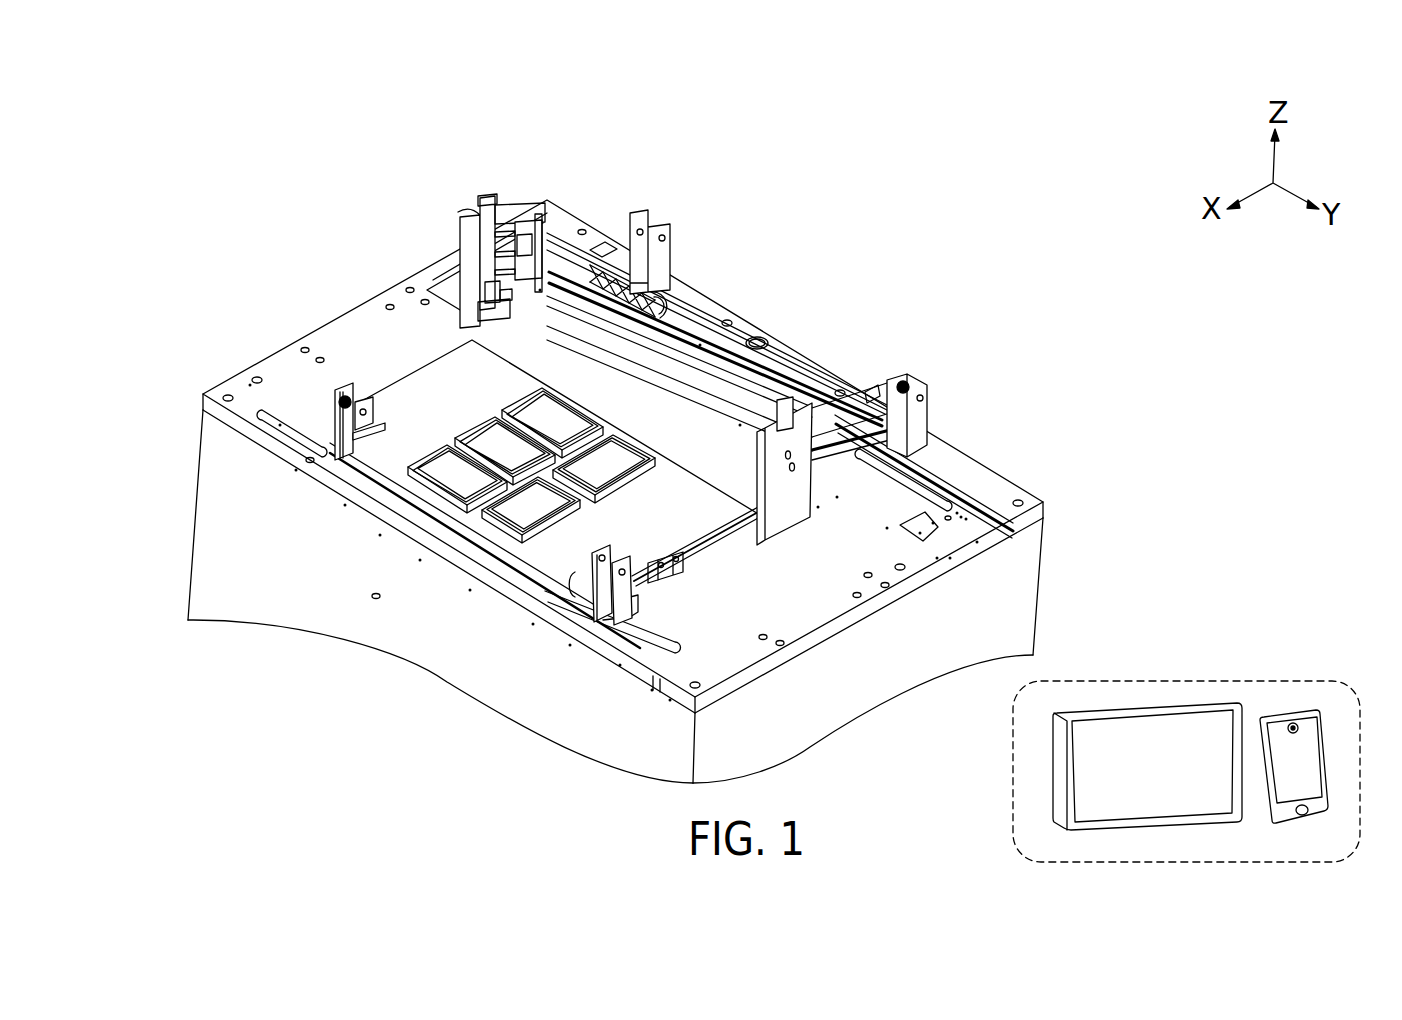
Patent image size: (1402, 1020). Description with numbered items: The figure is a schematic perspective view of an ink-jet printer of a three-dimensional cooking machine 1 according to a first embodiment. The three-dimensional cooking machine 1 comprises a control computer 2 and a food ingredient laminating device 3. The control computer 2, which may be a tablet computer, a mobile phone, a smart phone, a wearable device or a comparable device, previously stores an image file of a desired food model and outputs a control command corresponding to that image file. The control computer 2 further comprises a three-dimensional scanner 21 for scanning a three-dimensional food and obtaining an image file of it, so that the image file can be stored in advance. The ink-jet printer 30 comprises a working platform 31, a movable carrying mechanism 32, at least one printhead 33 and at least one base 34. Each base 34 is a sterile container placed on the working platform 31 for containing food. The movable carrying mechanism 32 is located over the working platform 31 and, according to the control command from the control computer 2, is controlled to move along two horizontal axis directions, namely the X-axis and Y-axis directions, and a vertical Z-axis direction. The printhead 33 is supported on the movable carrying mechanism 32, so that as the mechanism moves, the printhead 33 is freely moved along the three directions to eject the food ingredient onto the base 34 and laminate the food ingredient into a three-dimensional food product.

The three-dimensional cooking machine 1 is at (170, 153).
The control computer 2 is at (1013, 770).
The three-dimensional scanner 21 is at (1296, 725).
The food ingredient laminating device 3 is at (582, 194).
The ink-jet printer 30 is at (276, 352).
The working platform 31 is at (853, 605).
The movable carrying mechanism 32 is at (683, 336).
The printhead 33 is at (484, 312).
The base 34 is at (504, 524).